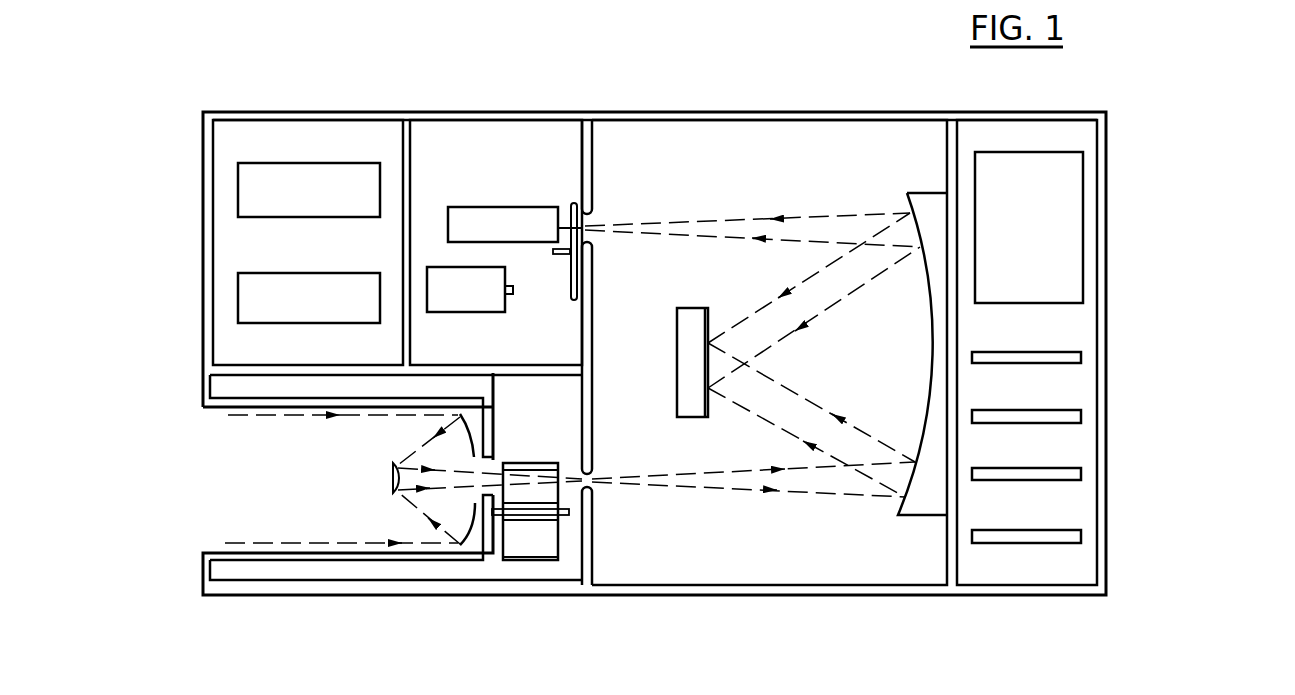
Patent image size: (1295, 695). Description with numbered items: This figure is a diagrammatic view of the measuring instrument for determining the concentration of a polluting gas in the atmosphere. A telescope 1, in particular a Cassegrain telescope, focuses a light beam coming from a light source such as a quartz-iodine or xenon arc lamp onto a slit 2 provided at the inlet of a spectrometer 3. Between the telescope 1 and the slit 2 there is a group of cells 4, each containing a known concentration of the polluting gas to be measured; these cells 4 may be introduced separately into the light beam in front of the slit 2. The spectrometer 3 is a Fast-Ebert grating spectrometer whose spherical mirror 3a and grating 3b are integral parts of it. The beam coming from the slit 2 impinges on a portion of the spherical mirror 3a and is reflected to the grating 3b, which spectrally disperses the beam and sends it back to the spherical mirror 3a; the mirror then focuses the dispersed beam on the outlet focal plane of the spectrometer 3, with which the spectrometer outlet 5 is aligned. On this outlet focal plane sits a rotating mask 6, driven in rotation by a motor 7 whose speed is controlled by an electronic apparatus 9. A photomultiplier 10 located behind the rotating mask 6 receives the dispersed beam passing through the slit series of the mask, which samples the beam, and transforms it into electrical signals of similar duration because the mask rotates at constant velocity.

The telescope 1 is at (362, 506).
The slit 2 is at (592, 483).
The spectrometer 3 is at (712, 598).
The spherical mirror 3a is at (926, 503).
The grating 3b is at (730, 294).
The cells 4 is at (523, 562).
The spectrometer outlet 5 is at (588, 221).
The rotating mask 6 is at (565, 168).
The motor 7 is at (467, 302).
The electronic apparatus 9 is at (263, 205).
The photomultiplier 10 is at (540, 96).